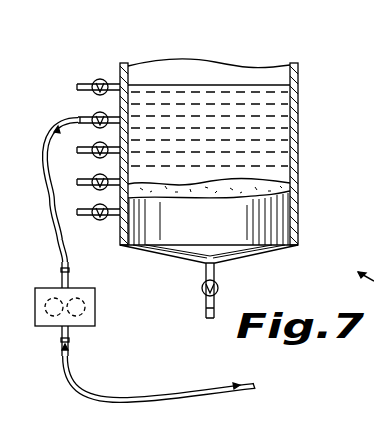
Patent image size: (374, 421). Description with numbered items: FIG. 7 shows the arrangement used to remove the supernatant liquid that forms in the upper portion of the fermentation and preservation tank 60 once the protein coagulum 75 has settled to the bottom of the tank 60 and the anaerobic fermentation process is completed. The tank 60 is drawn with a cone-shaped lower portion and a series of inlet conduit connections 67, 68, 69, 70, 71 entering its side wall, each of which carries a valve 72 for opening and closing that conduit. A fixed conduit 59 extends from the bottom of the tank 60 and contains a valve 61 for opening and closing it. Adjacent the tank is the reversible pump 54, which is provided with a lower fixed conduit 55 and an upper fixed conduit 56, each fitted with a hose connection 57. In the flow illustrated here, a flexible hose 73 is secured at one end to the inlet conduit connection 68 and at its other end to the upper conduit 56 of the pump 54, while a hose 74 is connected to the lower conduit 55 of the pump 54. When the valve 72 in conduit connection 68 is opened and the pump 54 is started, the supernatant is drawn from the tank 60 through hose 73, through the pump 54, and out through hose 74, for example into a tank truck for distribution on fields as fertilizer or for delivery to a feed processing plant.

The reversible pump 54 is at (95, 303).
The lower fixed conduit 55 is at (73, 330).
The upper fixed conduit 56 is at (68, 280).
The hose connection 57 is at (61, 270).
The fixed conduit 59 is at (215, 265).
The fermentation and preservation tank 60 is at (297, 100).
The valve 61 is at (218, 290).
The inlet conduit connection 67 is at (80, 84).
The inlet conduit connection 68 is at (88, 104).
The inlet conduit connection 69 is at (78, 150).
The inlet conduit connection 70 is at (100, 190).
The inlet conduit connection 71 is at (110, 217).
The valve 72 is at (100, 79).
The flexible hose 73 is at (47, 182).
The hose 74 is at (233, 383).
The protein coagulum 75 is at (283, 188).